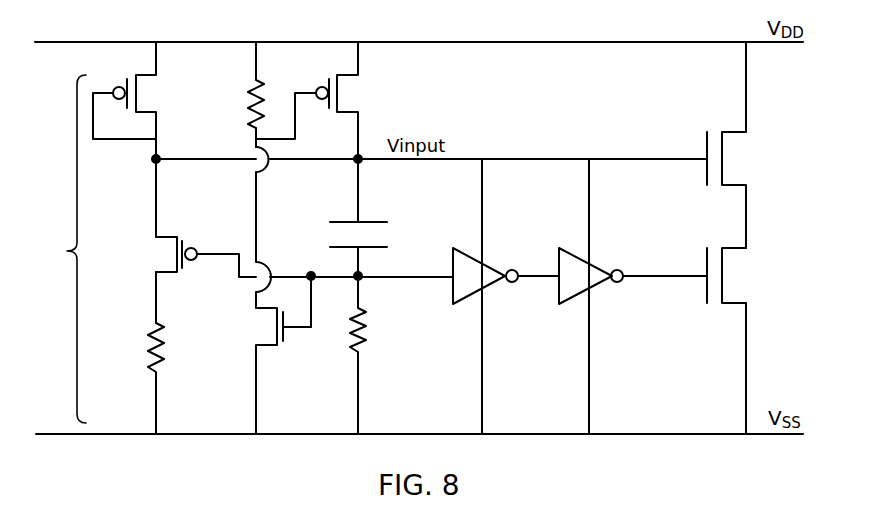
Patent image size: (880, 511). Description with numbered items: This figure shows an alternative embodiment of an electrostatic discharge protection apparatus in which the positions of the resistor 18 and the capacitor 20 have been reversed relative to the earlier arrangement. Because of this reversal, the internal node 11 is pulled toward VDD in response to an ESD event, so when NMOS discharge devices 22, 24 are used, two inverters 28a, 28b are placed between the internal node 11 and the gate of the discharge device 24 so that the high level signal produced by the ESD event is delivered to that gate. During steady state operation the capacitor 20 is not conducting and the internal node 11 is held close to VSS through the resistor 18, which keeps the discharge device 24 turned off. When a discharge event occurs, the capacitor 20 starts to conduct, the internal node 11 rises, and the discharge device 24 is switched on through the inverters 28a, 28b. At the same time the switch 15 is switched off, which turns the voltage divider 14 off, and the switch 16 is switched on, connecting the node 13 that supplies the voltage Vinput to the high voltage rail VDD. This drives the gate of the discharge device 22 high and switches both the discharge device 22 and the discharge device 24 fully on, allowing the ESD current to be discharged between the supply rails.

The voltage divider 14 is at (62, 249).
The switch 15 is at (176, 278).
The switch 16 is at (361, 92).
The node 13 is at (356, 162).
The capacitor 20 is at (388, 222).
The internal node 11 is at (366, 275).
The resistor 18 is at (362, 354).
The inverter 28a is at (512, 283).
The inverter 28b is at (617, 283).
The discharge device 22 is at (748, 156).
The discharge device 24 is at (762, 255).